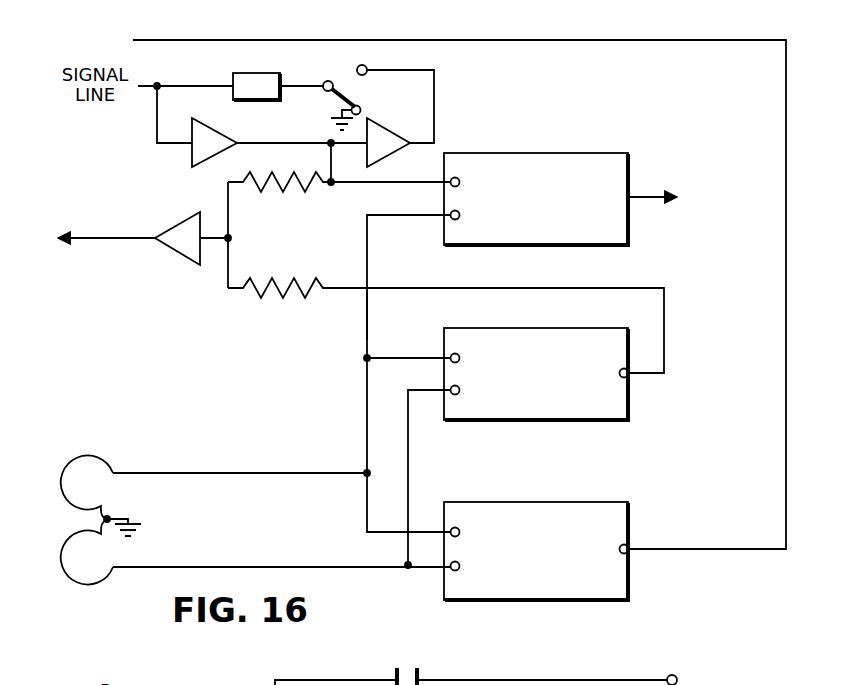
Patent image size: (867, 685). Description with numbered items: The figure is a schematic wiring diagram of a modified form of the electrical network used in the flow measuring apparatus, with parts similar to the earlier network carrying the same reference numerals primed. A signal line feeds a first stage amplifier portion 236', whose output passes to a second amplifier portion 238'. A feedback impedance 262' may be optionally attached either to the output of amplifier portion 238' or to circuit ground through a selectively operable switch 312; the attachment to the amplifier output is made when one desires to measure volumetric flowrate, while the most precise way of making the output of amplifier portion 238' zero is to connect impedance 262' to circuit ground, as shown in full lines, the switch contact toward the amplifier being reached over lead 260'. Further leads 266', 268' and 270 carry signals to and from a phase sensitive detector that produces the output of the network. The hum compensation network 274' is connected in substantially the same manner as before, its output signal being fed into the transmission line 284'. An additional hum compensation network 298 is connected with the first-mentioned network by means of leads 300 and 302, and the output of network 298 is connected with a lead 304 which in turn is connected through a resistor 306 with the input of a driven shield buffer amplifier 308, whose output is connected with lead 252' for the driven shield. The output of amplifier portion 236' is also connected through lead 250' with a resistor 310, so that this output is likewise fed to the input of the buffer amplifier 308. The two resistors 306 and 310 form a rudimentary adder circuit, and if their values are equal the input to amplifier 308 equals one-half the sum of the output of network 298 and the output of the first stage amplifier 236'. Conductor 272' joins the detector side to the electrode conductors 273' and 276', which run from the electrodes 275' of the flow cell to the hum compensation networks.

The transmission line 284' is at (459, 279).
The feedback impedance 262' is at (225, 74).
The switch contact lead 260' is at (420, 93).
The selectively operable switch 312 is at (337, 100).
The amplifier portion 238' is at (387, 126).
The amplifier portion 236' is at (199, 157).
The lead 250' is at (343, 162).
The phase detector input line 266' is at (395, 357).
The phase sensitive detector 268' is at (536, 175).
The output line 270 is at (656, 197).
The lead 252' is at (95, 247).
The driven shield buffer amplifier 308 is at (183, 260).
The resistor 310 is at (303, 190).
The resistor 306 is at (250, 293).
The conductor 272' is at (328, 323).
The lead 300 is at (399, 357).
The lead 304 is at (532, 288).
The electrode conductor 273' is at (241, 461).
The lead 302 is at (410, 448).
The hum compensation network 298 is at (574, 425).
The hum compensation network 274' is at (580, 540).
The electrodes 275' is at (84, 532).
The electrode conductor 276' is at (281, 589).